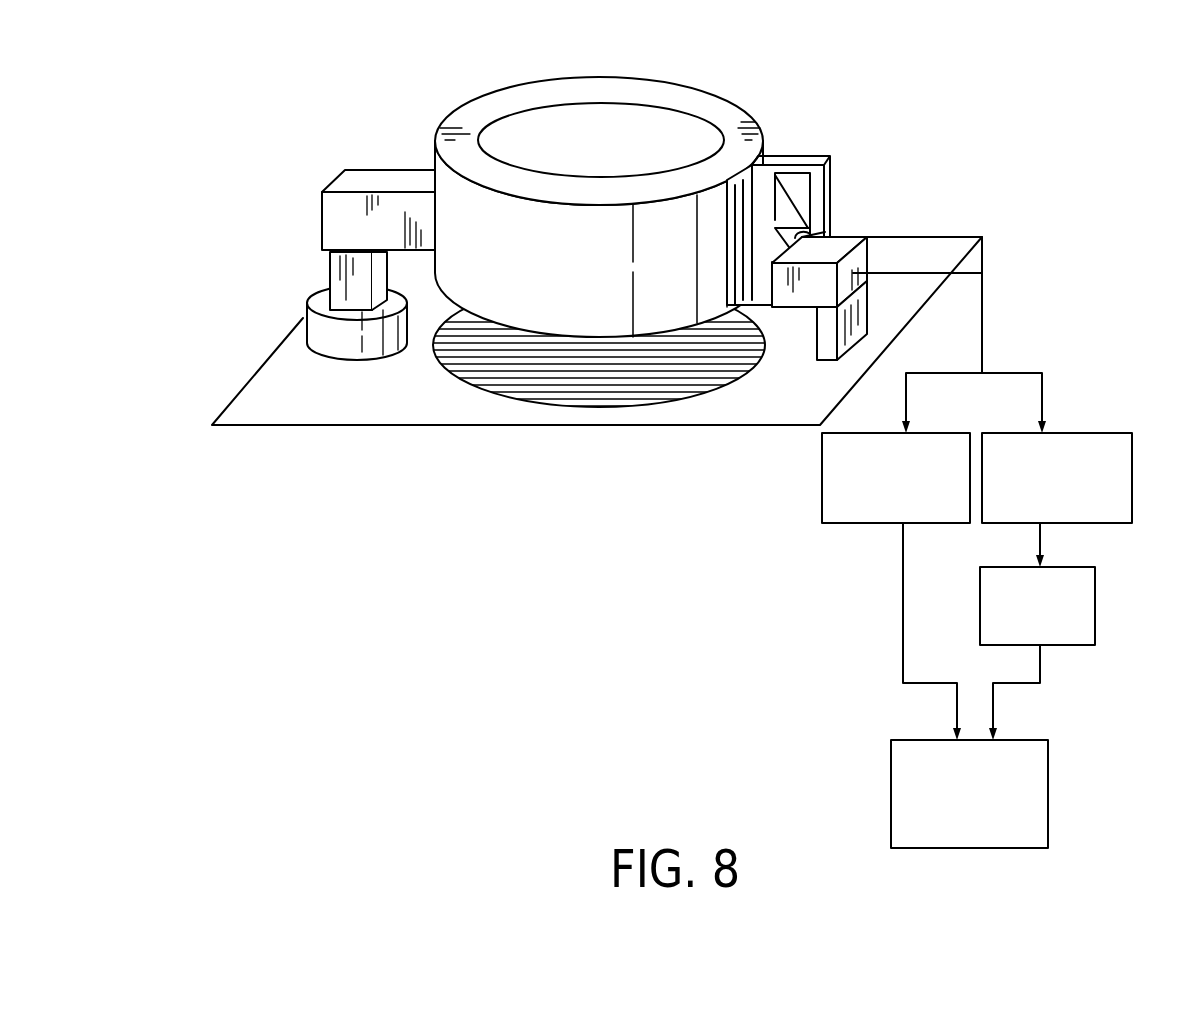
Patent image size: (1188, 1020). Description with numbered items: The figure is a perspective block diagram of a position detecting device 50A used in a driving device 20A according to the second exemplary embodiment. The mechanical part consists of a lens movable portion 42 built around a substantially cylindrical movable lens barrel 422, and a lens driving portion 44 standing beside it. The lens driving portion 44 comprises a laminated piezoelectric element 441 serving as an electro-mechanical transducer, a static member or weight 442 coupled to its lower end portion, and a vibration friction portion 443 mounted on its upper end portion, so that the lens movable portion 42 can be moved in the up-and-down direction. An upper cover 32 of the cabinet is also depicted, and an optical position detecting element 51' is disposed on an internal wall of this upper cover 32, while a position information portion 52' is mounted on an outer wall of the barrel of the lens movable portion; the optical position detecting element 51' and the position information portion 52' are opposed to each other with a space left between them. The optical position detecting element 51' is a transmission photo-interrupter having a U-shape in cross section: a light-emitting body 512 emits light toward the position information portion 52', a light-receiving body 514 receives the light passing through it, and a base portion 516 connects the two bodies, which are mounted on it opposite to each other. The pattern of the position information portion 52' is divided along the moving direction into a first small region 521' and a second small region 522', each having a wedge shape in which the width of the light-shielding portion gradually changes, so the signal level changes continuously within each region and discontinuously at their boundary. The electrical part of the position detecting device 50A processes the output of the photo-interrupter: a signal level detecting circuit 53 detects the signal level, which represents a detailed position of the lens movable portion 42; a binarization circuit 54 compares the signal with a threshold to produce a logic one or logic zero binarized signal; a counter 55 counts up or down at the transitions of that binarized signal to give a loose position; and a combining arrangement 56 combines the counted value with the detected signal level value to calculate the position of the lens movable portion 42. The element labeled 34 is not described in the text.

The driving device 20A is at (390, 118).
The lens movable portion 42 is at (490, 90).
The vibration friction portion 443 is at (352, 183).
The lens driving portion 44 is at (295, 223).
The laminated piezoelectric element 441 is at (337, 270).
The static member (weight) 442 is at (315, 333).
The base plate 34 is at (381, 427).
The movable lens barrel 422 is at (548, 317).
The first small region 521' is at (721, 365).
The light-emitting body 512 is at (800, 287).
The upper cover 32 is at (827, 338).
The second small region 522' is at (773, 155).
The position information portion 52' is at (813, 205).
The light-receiving body 514 is at (847, 233).
The optical position detecting element 51' is at (860, 247).
The base portion 516 is at (960, 238).
The position detecting device 50A is at (1043, 333).
The signal level detecting circuit 53 is at (843, 431).
The binarization circuit 54 is at (1073, 431).
The counter 55 is at (1095, 600).
The combining arrangement 56 is at (1050, 789).